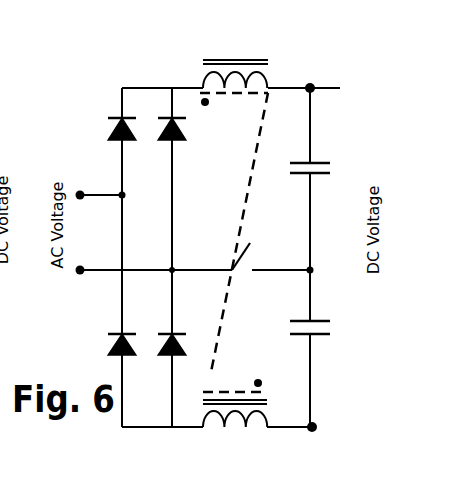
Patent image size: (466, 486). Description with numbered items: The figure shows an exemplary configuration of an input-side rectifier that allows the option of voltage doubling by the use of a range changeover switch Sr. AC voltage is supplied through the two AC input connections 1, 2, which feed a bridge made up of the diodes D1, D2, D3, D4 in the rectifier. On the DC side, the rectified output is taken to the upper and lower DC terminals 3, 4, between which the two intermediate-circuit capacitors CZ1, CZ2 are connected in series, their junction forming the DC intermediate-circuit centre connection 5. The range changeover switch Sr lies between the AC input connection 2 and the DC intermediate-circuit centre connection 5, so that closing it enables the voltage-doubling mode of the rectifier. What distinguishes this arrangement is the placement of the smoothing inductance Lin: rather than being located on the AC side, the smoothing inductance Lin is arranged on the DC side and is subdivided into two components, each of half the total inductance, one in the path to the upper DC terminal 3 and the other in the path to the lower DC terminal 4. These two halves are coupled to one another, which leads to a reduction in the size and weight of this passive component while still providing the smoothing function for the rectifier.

The AC input connection 1 is at (101, 183).
The AC input connection 2 is at (193, 255).
The DC output terminal 3 is at (311, 74).
The DC output terminal 4 is at (326, 430).
The DC intermediate-circuit centre connection 5 is at (320, 270).
The diode D1 is at (101, 135).
The diode D2 is at (189, 136).
The diode D3 is at (108, 331).
The diode D4 is at (164, 331).
The intermediate-circuit capacitor CZ1 is at (319, 156).
The intermediate-circuit capacitor CZ2 is at (320, 348).
The range changeover switch Sr is at (254, 248).
The smoothing inductance Lin is at (234, 248).